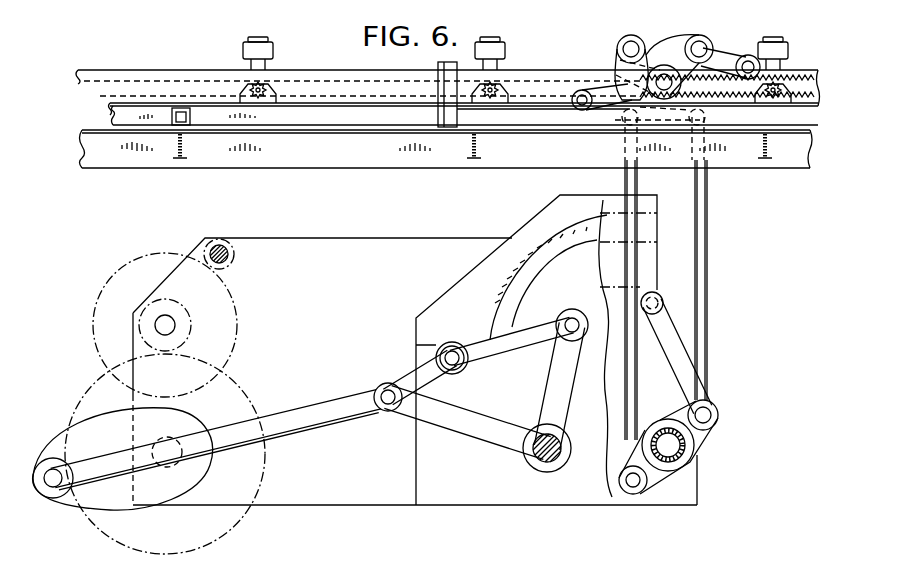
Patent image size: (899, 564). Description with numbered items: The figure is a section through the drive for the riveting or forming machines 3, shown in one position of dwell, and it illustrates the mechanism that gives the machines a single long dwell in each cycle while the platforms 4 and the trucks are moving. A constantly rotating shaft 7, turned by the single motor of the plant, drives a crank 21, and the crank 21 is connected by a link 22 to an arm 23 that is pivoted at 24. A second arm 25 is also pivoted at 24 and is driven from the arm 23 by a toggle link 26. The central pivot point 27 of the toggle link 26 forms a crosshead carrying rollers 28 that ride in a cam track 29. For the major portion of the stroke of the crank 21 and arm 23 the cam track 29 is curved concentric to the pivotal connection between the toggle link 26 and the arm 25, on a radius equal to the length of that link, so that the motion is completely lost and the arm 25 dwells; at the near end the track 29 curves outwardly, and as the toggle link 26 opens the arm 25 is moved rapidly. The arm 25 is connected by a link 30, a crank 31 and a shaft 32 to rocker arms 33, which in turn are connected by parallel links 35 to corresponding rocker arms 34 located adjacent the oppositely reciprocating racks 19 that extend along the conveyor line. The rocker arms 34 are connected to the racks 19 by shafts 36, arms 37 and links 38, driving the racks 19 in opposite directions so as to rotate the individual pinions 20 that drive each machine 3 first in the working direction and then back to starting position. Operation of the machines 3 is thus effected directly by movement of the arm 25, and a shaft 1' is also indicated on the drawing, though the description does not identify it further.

The shaft 1' is at (231, 254).
The riveters or forming machines 3 is at (270, 54).
The platforms 4 is at (112, 114).
The constantly rotating shaft 7 is at (184, 463).
The oppositely reciprocating racks 19 is at (326, 64).
The pinions 20 is at (250, 86).
The crank 21 is at (103, 426).
The link 22 is at (302, 398).
The arm 23 is at (432, 426).
The pivot 24 is at (538, 466).
The second arm 25 is at (540, 382).
The toggle link 26 is at (454, 374).
The central pivot point 27 is at (451, 355).
The rollers 28 is at (462, 348).
The cam track 29 is at (512, 296).
The link 30 is at (690, 343).
The crank 31 is at (718, 437).
The shaft 32 is at (684, 460).
The rocker arms 33 is at (655, 478).
The rocker arms 34 is at (695, 40).
The parallel links 35 is at (626, 182).
The shafts 36 is at (664, 78).
The arms 37 is at (622, 60).
The links 38 is at (745, 57).